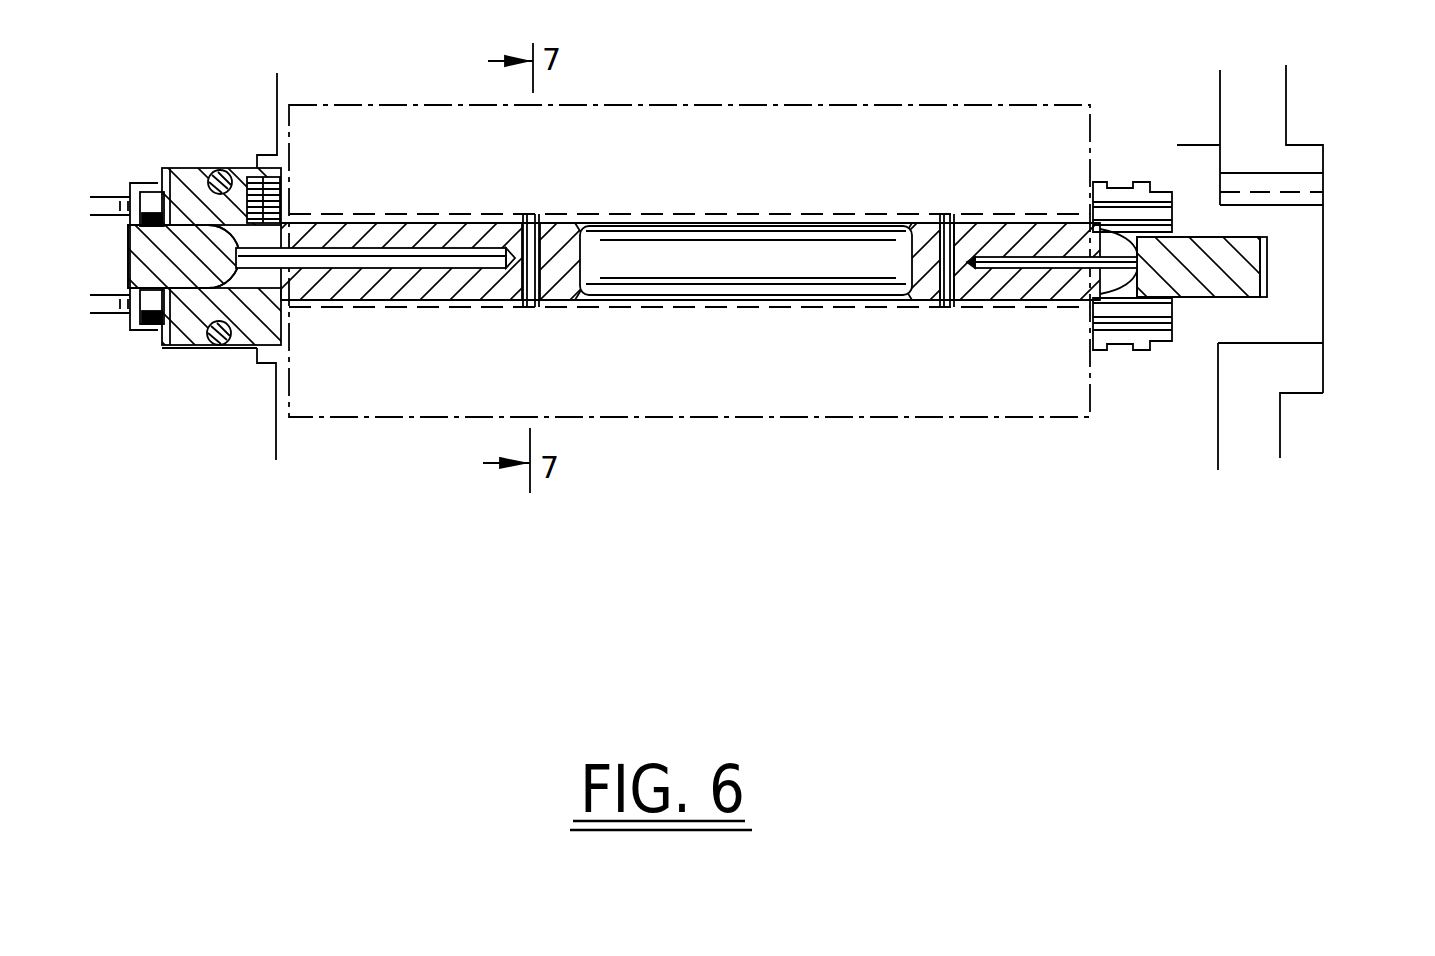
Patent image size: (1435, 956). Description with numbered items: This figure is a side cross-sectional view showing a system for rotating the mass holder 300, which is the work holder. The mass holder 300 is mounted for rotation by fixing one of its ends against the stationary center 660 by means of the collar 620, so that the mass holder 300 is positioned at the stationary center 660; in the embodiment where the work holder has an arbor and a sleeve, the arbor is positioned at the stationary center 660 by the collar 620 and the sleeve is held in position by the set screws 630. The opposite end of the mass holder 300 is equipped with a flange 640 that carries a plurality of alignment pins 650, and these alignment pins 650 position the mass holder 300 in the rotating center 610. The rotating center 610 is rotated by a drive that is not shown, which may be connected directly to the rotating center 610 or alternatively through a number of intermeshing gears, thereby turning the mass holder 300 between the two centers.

The mass holder 300 is at (752, 262).
The rotating center 610 is at (130, 245).
The collar 620 is at (184, 345).
The set screws 630 is at (262, 168).
The flange 640 is at (1093, 195).
The alignment pins 650 is at (1090, 325).
The stationary center 660 is at (1245, 270).